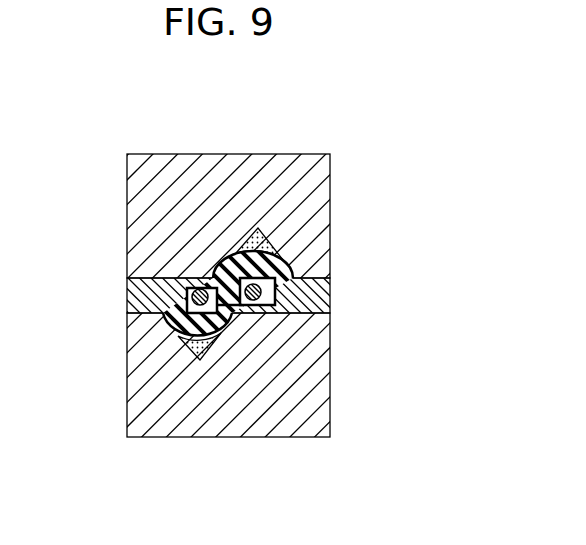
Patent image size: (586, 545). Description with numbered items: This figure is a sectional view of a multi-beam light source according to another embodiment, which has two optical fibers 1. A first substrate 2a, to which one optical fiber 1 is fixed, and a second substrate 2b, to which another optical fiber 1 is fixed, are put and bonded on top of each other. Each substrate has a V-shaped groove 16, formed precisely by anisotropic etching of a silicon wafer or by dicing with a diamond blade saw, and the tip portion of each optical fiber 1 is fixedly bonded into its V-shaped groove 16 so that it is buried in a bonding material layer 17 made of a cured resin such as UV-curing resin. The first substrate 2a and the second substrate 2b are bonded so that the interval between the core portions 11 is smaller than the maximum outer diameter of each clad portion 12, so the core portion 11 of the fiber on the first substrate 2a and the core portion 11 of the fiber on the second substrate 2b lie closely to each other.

The optical fiber 1 is at (260, 280).
The first substrate 2a is at (203, 165).
The second substrate 2b is at (178, 415).
The core portion 11 is at (268, 297).
The clad portion 12 is at (283, 262).
The V-shaped groove 16 is at (147, 296).
The bonding material layer 17 is at (205, 356).